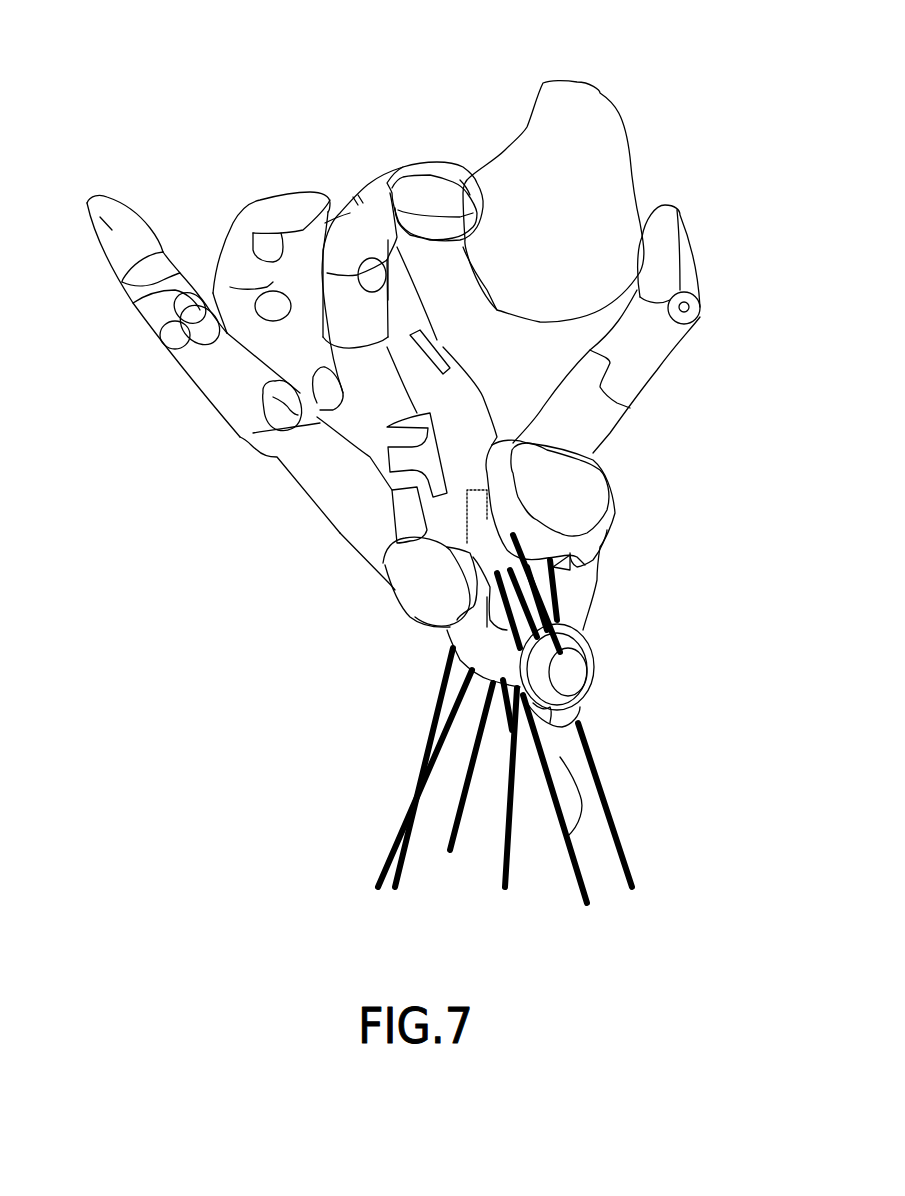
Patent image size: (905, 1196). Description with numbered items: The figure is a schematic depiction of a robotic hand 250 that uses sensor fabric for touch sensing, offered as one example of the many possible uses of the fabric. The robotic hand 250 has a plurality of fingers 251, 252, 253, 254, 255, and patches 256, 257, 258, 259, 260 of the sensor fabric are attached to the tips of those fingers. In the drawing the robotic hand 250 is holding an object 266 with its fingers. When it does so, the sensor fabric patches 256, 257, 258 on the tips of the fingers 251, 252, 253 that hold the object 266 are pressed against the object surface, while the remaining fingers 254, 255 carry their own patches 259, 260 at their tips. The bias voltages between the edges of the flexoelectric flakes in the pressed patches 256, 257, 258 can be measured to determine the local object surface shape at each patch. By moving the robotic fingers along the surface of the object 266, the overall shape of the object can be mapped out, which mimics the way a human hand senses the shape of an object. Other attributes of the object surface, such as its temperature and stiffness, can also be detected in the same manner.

The robotic hand 250 is at (327, 515).
The finger 251 is at (700, 270).
The finger 252 is at (434, 232).
The finger 253 is at (352, 200).
The finger 254 is at (297, 276).
The finger 255 is at (193, 381).
The sensor fabric patch 256 is at (670, 216).
The sensor fabric patch 257 is at (463, 193).
The sensor fabric patch 258 is at (447, 230).
The sensor fabric patch 259 is at (295, 230).
The sensor fabric patch 260 is at (88, 203).
The object 266 is at (583, 111).